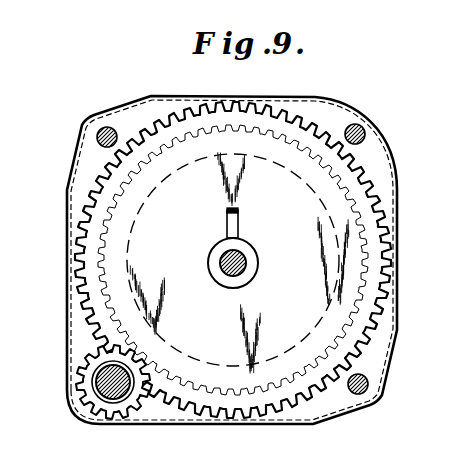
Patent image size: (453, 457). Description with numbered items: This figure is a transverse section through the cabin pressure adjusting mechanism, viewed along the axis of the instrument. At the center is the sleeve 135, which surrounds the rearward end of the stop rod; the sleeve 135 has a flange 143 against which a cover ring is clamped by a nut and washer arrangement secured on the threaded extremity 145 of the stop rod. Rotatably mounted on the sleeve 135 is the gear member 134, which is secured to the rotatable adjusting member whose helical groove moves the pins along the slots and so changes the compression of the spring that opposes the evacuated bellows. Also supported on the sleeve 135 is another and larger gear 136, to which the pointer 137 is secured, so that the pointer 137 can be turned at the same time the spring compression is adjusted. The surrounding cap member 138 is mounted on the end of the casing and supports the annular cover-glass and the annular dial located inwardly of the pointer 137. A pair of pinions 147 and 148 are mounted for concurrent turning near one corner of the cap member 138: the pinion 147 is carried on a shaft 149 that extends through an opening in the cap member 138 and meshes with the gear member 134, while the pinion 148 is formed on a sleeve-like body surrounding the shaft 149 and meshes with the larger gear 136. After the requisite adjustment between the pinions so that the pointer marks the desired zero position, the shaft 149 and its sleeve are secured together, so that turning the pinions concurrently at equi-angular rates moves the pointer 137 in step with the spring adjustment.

The gear member 134 is at (345, 343).
The sleeve 135 is at (230, 272).
The larger gear 136 is at (375, 188).
The pointer 137 is at (228, 212).
The cap member 138 is at (342, 106).
The flange 143 is at (247, 277).
The threaded extremity 145 is at (222, 258).
The pinion 147 is at (72, 388).
The pinion 148 is at (123, 410).
The shaft 149 is at (103, 392).